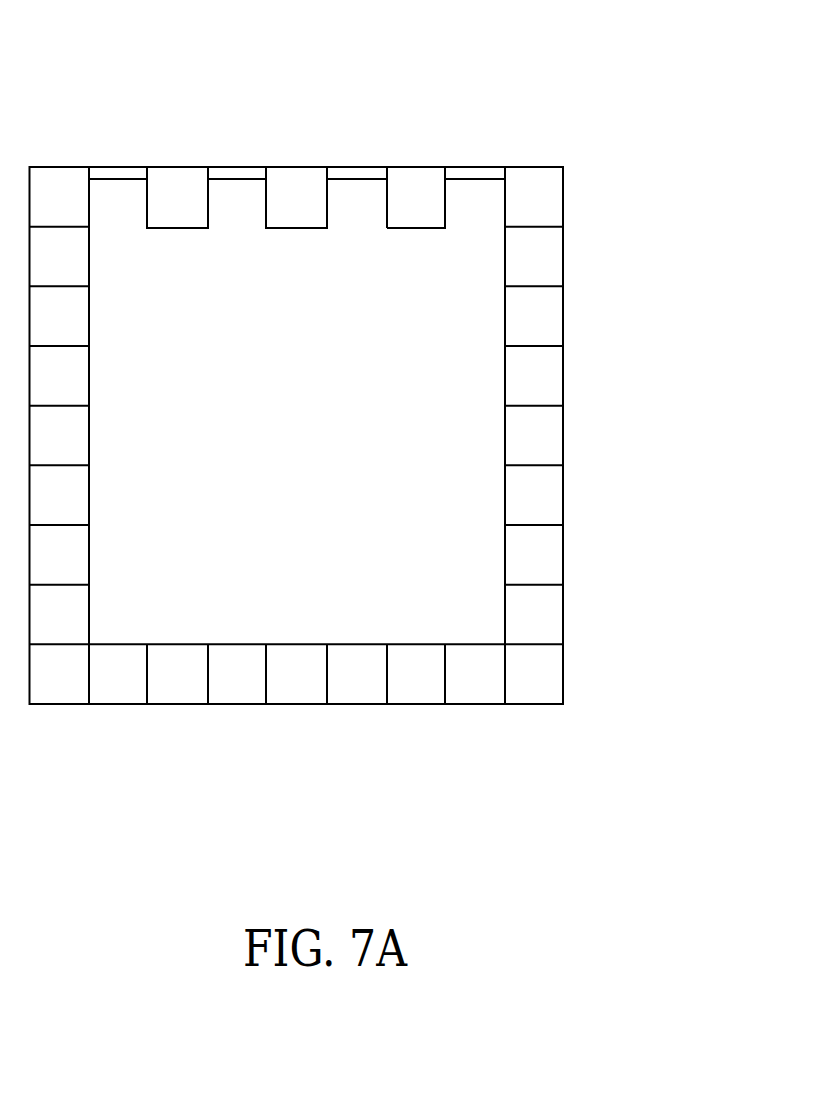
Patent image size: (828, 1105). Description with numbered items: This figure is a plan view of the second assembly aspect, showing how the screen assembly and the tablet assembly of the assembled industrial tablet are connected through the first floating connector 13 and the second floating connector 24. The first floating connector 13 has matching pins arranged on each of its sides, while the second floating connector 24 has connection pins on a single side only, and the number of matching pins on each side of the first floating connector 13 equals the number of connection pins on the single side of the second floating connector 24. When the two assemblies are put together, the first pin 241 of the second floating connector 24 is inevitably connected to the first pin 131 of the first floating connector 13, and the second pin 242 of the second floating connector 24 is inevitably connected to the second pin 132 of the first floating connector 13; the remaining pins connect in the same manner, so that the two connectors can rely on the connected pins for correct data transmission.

The first floating connector 13 is at (188, 167).
The first pin 131 is at (484, 163).
The second pin 132 is at (366, 163).
The second floating connector 24 is at (422, 333).
The first pin 241 is at (480, 202).
The second pin 242 is at (360, 202).